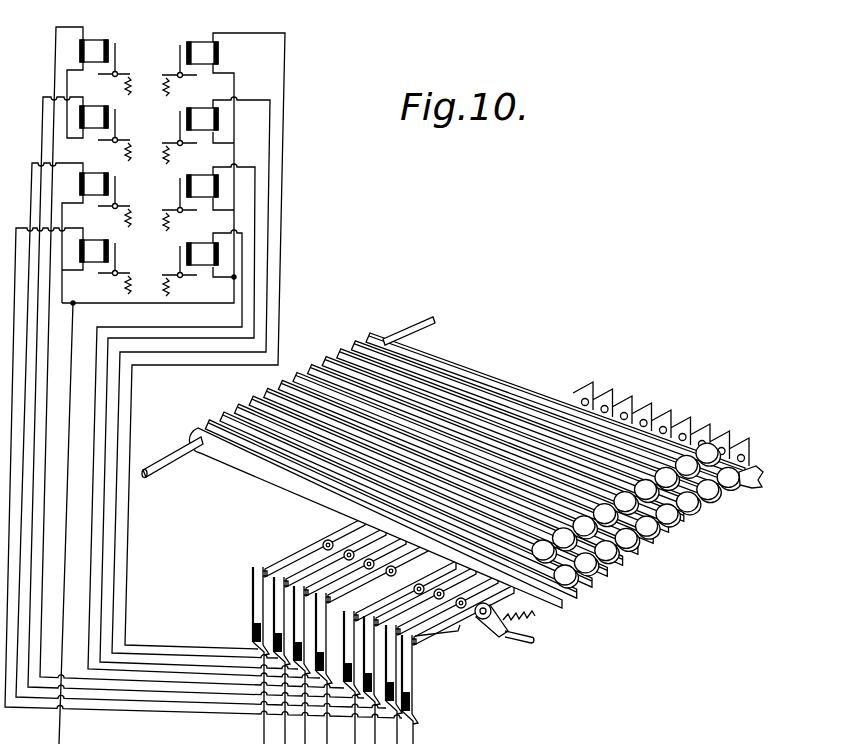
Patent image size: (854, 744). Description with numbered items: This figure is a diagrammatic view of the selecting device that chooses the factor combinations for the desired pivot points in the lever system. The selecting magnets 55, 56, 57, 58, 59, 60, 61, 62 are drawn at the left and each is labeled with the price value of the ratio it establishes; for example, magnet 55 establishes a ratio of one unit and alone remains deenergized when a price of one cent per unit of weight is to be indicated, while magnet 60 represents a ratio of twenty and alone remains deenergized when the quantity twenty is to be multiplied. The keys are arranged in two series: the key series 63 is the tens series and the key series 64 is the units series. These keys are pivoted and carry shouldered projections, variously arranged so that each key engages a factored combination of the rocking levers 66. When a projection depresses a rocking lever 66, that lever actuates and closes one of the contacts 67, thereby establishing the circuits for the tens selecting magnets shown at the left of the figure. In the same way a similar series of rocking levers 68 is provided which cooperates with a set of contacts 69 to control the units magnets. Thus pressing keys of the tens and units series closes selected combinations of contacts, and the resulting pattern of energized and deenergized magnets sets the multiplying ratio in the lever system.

The magnet 55 is at (193, 41).
The magnet 56 is at (190, 110).
The magnet 57 is at (190, 178).
The magnet 58 is at (192, 245).
The magnet 59 is at (86, 41).
The magnet 60 is at (85, 108).
The magnet 61 is at (86, 176).
The magnet 62 is at (86, 242).
The key series 63 is at (682, 448).
The key series 64 is at (603, 570).
The rocking levers 66 is at (447, 630).
The contacts 67 is at (405, 668).
The rocking levers 68 is at (350, 530).
The contacts 69 is at (285, 613).